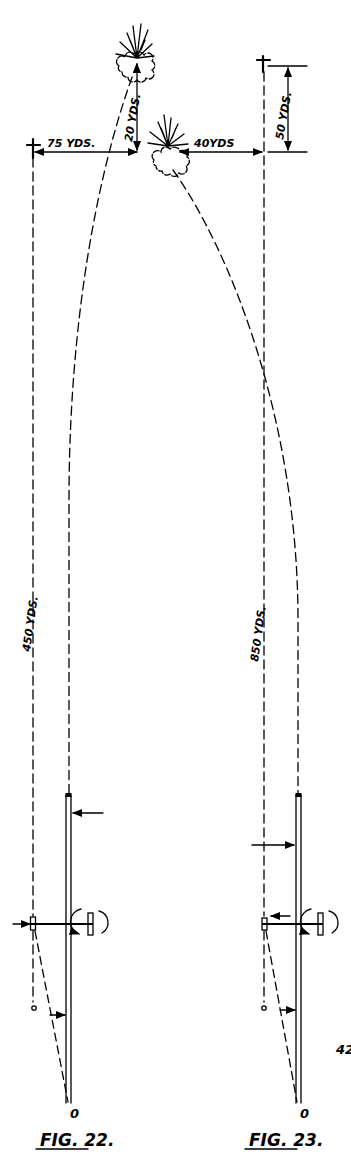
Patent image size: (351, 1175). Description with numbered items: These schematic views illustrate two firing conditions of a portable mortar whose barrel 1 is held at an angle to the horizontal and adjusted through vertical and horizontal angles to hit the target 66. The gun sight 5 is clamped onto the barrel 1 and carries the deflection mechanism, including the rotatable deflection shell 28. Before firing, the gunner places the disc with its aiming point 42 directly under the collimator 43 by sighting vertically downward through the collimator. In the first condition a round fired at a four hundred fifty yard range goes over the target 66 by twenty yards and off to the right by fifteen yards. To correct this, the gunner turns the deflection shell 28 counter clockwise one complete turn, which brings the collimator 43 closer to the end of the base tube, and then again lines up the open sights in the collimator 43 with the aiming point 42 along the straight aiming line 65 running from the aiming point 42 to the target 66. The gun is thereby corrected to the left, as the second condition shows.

In FIG. 22, the barrel 1 is at (73, 860).
In FIG. 23, the barrel 1 is at (302, 860).
In FIG. 22, the gun sight 5 is at (83, 912).
In FIG. 23, the gun sight 5 is at (309, 912).
In FIG. 22, the deflection shell 28 is at (90, 936).
In FIG. 23, the deflection shell 28 is at (320, 936).
In FIG. 22, the aiming point 42 is at (33, 1011).
In FIG. 23, the aiming point 42 is at (263, 1011).
In FIG. 22, the collimator 43 is at (35, 916).
In FIG. 23, the collimator 43 is at (261, 924).
In FIG. 22, the straight aiming line 65 is at (35, 717).
In FIG. 23, the straight aiming line 65 is at (262, 721).
In FIG. 22, the target 66 is at (33, 139).
In FIG. 23, the target 66 is at (264, 57).